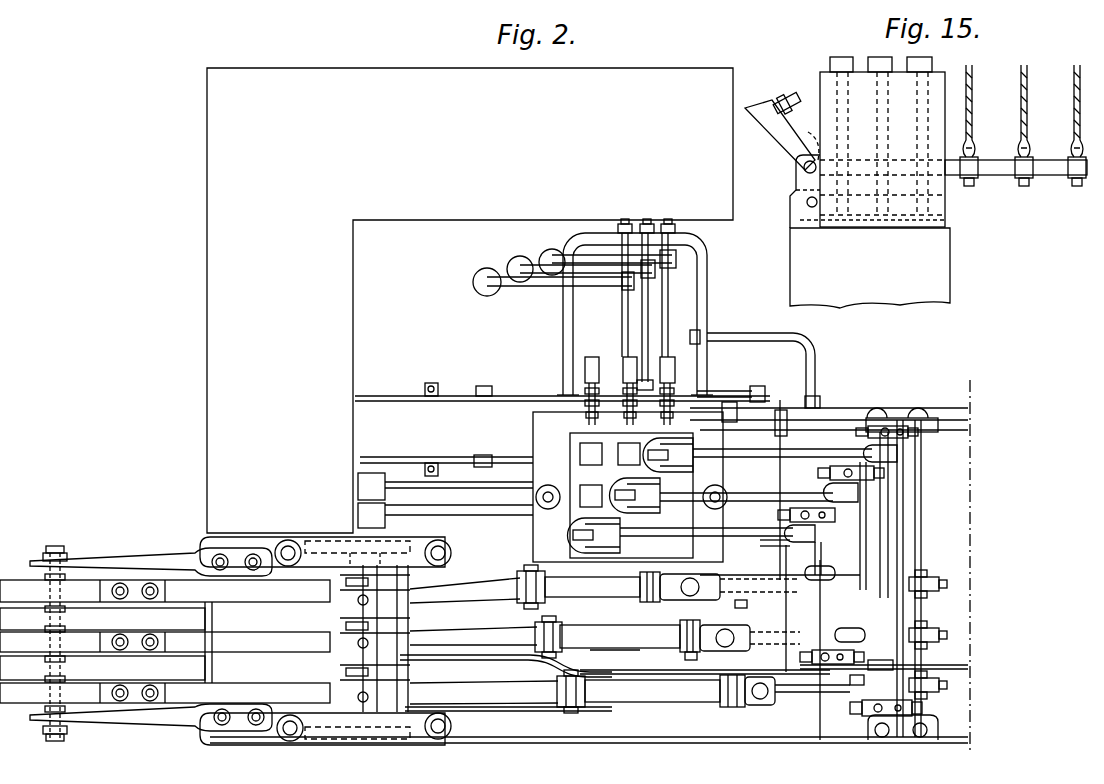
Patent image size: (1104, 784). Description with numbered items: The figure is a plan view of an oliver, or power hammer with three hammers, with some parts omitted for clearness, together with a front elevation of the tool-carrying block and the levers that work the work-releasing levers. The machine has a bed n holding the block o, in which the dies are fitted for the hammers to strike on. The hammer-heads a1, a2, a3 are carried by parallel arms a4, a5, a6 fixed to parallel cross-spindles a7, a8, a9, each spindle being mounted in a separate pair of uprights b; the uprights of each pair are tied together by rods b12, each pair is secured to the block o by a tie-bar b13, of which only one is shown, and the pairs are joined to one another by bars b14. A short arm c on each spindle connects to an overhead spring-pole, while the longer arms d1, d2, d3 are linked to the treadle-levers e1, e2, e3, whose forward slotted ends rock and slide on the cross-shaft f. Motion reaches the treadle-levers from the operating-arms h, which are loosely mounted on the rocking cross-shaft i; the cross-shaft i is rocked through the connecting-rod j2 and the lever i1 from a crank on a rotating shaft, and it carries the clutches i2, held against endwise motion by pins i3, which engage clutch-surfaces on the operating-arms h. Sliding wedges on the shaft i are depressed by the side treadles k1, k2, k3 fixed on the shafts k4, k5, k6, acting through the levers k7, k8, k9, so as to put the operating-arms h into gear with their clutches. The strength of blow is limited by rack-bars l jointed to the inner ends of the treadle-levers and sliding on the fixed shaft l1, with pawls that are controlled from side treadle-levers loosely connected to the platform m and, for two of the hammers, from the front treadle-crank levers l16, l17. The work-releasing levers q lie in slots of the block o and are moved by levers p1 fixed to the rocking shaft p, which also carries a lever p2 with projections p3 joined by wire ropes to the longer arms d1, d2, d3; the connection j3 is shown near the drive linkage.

In FIG. 2, the platform m is at (470, 300).
In FIG. 2, the treadle k1 is at (485, 280).
In FIG. 2, the treadle k2 is at (520, 268).
In FIG. 2, the treadle k3 is at (552, 260).
In FIG. 2, the shaft k4 is at (625, 303).
In FIG. 2, the shaft k5 is at (645, 334).
In FIG. 2, the shaft k6 is at (666, 298).
In FIG. 2, the work-releasing lever q is at (590, 369).
In FIG. 15, the work-releasing lever q is at (780, 135).
In FIG. 2, the treadle-crank lever l17 is at (393, 402).
In FIG. 2, the treadle-crank lever l16 is at (392, 463).
In FIG. 2, the cross-shaft i is at (362, 556).
In FIG. 2, the lever i1 is at (334, 668).
In FIG. 2, the clutch i2 is at (381, 637).
In FIG. 2, the pin i3 is at (332, 592).
In FIG. 2, the cross-shaft f is at (50, 620).
In FIG. 2, the operating-arm h is at (480, 591).
In FIG. 2, the treadle-lever e1 is at (602, 587).
In FIG. 2, the treadle-lever e2 is at (630, 636).
In FIG. 2, the treadle-lever e3 is at (665, 691).
In FIG. 2, the lever k7 is at (506, 644).
In FIG. 2, the lever k8 is at (600, 650).
In FIG. 2, the lever k9 is at (598, 707).
In FIG. 2, the longer arm d1 is at (730, 593).
In FIG. 2, the longer arm d2 is at (755, 650).
In FIG. 2, the longer arm d3 is at (790, 702).
In FIG. 2, the connecting-rod j2 is at (688, 660).
In FIG. 2, the nut j3 is at (760, 595).
In FIG. 2, the bed n is at (630, 487).
In FIG. 15, the bed n is at (870, 231).
In FIG. 2, the block o is at (631, 495).
In FIG. 15, the block o is at (882, 142).
In FIG. 2, the hammer-head a1 is at (594, 535).
In FIG. 2, the hammer-head a2 is at (635, 495).
In FIG. 2, the hammer-head a3 is at (668, 455).
In FIG. 2, the arm a4 is at (706, 534).
In FIG. 2, the arm a5 is at (746, 496).
In FIG. 2, the arm a6 is at (782, 454).
In FIG. 2, the cross-spindle a7 is at (823, 545).
In FIG. 2, the cross-spindle a8 is at (850, 518).
In FIG. 2, the cross-spindle a9 is at (889, 497).
In FIG. 2, the rocking shaft p is at (843, 416).
In FIG. 15, the rocking shaft p is at (809, 136).
In FIG. 2, the lever p1 is at (686, 416).
In FIG. 15, the lever p1 is at (787, 100).
In FIG. 2, the lever p2 is at (781, 414).
In FIG. 15, the lever p2 is at (1016, 169).
In FIG. 15, the projection p3 is at (1072, 176).
In FIG. 2, the upright b is at (856, 433).
In FIG. 2, the rod b12 is at (877, 472).
In FIG. 2, the tie-bar b13 is at (765, 540).
In FIG. 2, the bar b14 is at (882, 660).
In FIG. 2, the short arm c is at (792, 570).
In FIG. 2, the rack-bar l is at (944, 690).
In FIG. 2, the shaft l1 is at (926, 664).